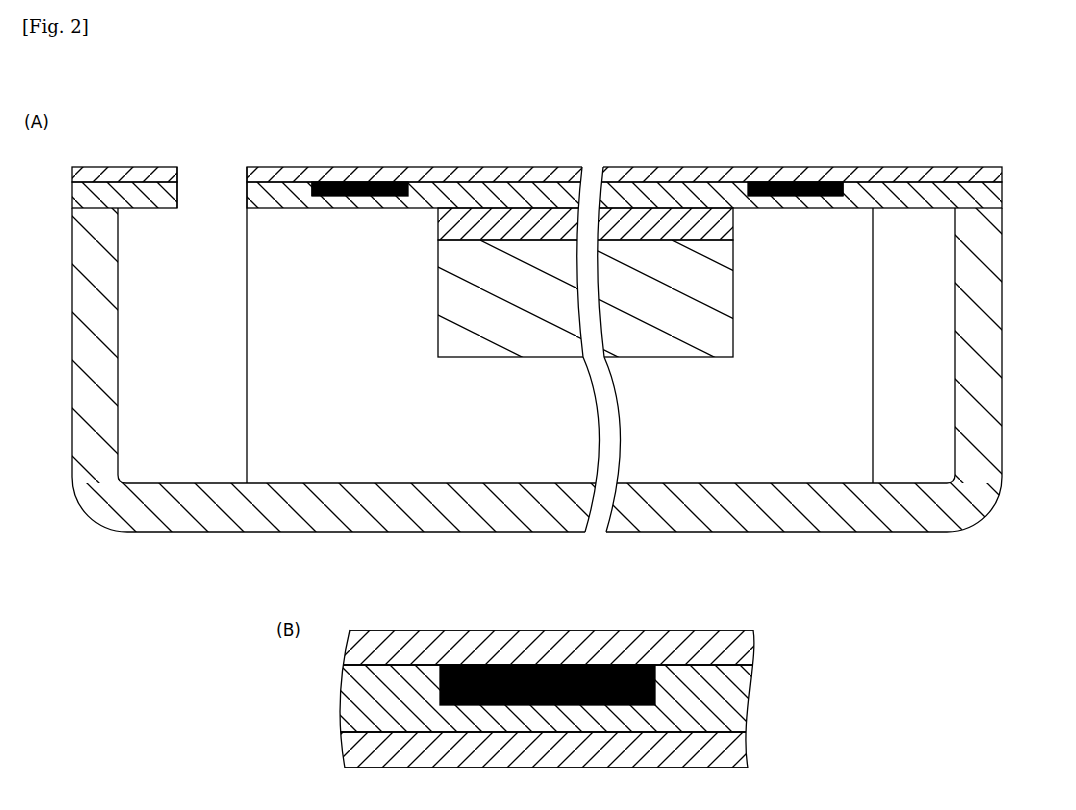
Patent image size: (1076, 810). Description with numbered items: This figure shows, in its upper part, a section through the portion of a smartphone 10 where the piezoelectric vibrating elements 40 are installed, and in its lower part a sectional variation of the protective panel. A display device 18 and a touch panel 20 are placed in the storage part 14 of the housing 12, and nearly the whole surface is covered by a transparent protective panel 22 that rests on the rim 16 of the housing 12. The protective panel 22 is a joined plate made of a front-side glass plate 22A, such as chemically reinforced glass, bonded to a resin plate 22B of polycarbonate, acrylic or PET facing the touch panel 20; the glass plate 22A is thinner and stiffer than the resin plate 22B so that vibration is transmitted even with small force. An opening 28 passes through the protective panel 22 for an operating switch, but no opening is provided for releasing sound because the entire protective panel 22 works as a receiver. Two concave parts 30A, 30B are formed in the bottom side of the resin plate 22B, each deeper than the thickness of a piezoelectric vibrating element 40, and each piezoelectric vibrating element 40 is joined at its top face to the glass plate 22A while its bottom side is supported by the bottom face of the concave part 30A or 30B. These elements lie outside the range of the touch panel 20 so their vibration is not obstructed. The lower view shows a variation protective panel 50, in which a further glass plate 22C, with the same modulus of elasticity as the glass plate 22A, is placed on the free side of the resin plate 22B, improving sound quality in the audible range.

The smartphone 10 is at (853, 118).
The housing 12 is at (1003, 285).
The storage part 14 is at (350, 460).
The rim 16 is at (1003, 206).
The display device 18 is at (438, 292).
The touch panel 20 is at (438, 222).
The protective panel 22 is at (546, 185).
The glass plate 22A is at (1003, 173).
The resin plate 22B is at (1003, 196).
The glass plate 22C is at (750, 745).
The opening 28 is at (209, 172).
The concave part 30A is at (846, 197).
The concave part 30B is at (312, 196).
The piezoelectric vibrating element 40 is at (350, 183).
The protective panel 50 is at (580, 695).